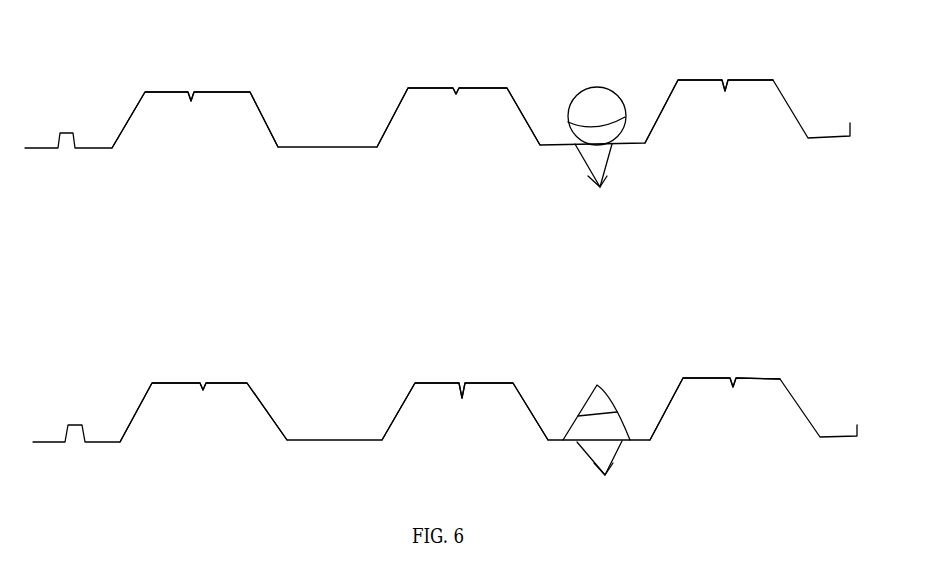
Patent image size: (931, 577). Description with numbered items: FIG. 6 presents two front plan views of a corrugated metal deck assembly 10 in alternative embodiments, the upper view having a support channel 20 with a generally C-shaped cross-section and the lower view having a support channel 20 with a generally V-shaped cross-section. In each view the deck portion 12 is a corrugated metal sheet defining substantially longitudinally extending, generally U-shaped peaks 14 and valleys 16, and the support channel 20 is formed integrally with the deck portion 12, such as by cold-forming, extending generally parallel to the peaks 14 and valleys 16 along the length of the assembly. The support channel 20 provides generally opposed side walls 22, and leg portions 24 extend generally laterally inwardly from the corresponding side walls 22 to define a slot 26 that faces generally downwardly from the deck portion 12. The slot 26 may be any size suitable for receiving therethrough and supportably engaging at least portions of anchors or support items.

The corrugated metal deck assembly 10 is at (749, 71).
The deck portion 12 is at (672, 85).
The peaks 14 is at (151, 101).
The valleys 16 is at (647, 83).
The support channel 20 is at (565, 118).
The side walls 22 is at (596, 270).
The leg portions 24 is at (600, 336).
The slot 26 is at (595, 140).